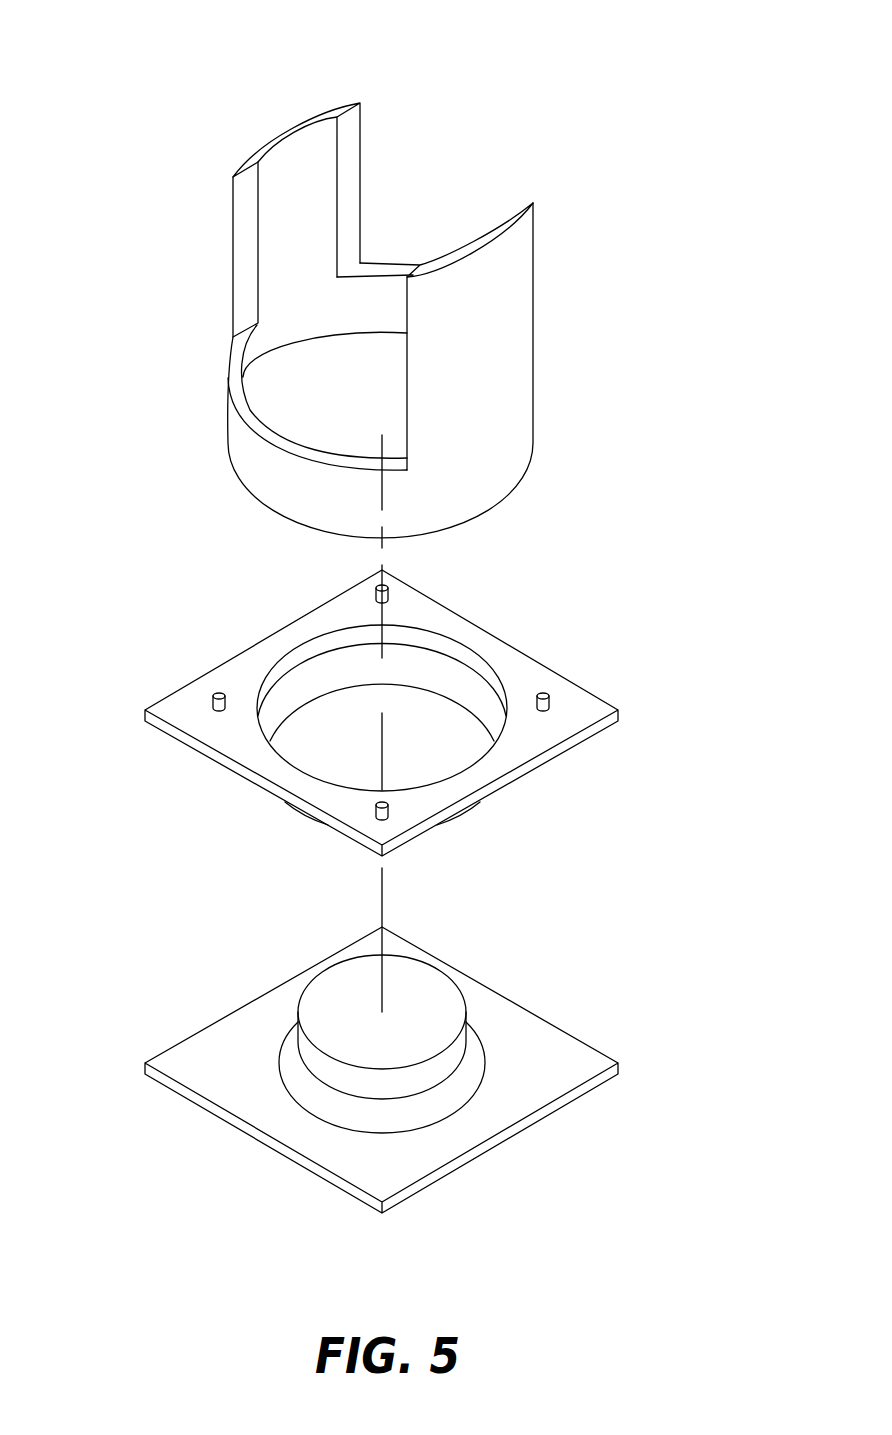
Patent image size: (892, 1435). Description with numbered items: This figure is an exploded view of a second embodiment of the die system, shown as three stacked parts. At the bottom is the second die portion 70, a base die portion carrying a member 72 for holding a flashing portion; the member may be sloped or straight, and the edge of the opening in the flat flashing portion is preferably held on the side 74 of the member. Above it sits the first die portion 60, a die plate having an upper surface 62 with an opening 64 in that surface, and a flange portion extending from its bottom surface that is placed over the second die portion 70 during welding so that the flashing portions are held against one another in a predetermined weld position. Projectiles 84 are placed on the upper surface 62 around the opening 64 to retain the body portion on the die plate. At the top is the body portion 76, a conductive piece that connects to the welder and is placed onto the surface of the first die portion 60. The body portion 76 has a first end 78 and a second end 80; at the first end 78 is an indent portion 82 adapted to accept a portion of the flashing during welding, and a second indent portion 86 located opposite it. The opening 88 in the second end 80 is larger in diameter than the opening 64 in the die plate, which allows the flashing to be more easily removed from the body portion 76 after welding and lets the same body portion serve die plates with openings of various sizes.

The first die portion 60 is at (372, 698).
The upper surface 62 is at (510, 658).
The opening 64 is at (382, 707).
The second die portion 70 is at (560, 1008).
The member 72 is at (330, 1017).
The side of the member 74 is at (425, 1108).
The body portion 76 is at (505, 370).
The first end 78 is at (243, 125).
The second end 80 is at (232, 485).
The indent portion 82 is at (380, 205).
The projectiles 84 is at (545, 697).
The second indent portion 86 is at (307, 245).
The opening 88 is at (380, 367).